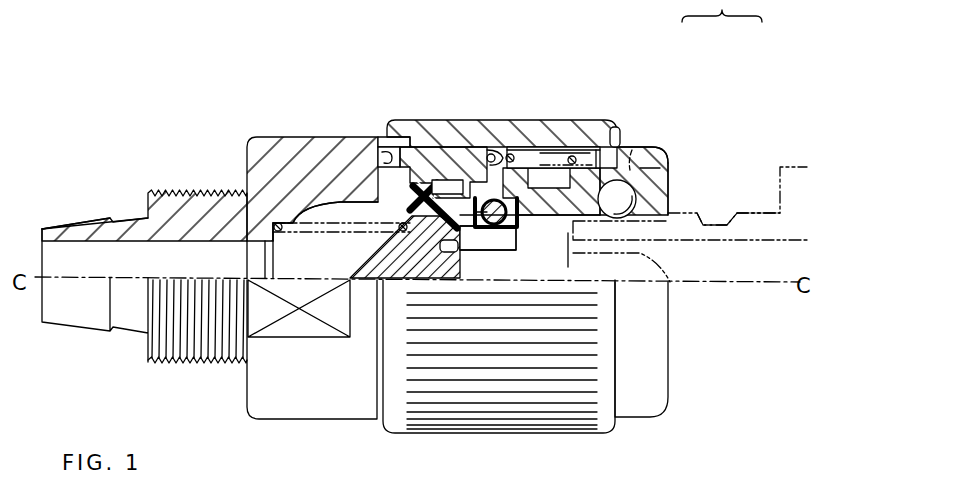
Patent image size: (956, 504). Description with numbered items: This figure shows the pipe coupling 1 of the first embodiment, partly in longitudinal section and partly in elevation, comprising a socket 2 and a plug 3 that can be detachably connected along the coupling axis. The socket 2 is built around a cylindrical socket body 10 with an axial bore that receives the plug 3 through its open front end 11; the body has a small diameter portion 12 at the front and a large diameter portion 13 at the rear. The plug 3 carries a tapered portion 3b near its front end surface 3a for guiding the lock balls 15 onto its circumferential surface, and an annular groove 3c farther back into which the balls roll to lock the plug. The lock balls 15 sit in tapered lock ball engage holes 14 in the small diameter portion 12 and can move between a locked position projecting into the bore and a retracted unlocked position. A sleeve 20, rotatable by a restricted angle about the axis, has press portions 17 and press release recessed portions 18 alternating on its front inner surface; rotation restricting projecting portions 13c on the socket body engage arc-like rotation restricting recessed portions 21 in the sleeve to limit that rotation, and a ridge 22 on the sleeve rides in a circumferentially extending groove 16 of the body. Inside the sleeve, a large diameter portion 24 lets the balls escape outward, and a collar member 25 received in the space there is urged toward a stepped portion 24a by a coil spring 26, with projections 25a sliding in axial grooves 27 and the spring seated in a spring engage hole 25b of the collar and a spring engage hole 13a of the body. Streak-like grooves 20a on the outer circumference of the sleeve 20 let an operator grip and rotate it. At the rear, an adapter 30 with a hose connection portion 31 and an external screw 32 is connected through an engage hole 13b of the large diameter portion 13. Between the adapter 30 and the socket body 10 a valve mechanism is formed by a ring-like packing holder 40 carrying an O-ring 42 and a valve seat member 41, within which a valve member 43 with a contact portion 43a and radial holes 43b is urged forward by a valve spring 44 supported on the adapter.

The pipe coupling 1 is at (731, 4).
The socket 2 is at (670, 106).
The plug 3 is at (780, 167).
The front end surface 3a is at (670, 282).
The tapered portion 3b is at (658, 217).
The annular groove 3c is at (737, 215).
The socket body 10 is at (284, 128).
The front end 11 is at (668, 208).
The small diameter portion 12 is at (520, 208).
The large diameter portion 13 is at (310, 137).
The spring engage hole 13a is at (472, 145).
The engage hole 13b is at (385, 158).
The rotation restricting projecting portion 13c is at (388, 137).
The lock ball engage hole 14 is at (566, 240).
The lock ball 15 is at (668, 160).
The circumferentially extending groove 16 is at (668, 190).
The press portion 17 is at (622, 142).
The press release recessed portion 18 is at (632, 150).
The sleeve 20 is at (477, 101).
The knurled grip 20a is at (590, 364).
The rotation restricting recessed portion 21 is at (418, 120).
The ridge 22 is at (668, 178).
The large diameter portion 24 is at (533, 121).
The stepped portion 24a is at (623, 121).
The collar member 25 is at (583, 121).
The projection 25a is at (568, 155).
The spring engage hole 25b is at (598, 160).
The coil spring 26 is at (505, 121).
The groove 27 is at (514, 154).
The adapter 30 is at (156, 185).
The hose connection portion 31 is at (82, 221).
The external screw 32 is at (207, 191).
The packing holder 40 is at (455, 280).
The valve seat member 41 is at (373, 215).
The O-ring 42 is at (480, 280).
The valve member 43 is at (372, 243).
The contact portion 43a is at (505, 280).
The radial hole 43b is at (478, 280).
The valve spring 44 is at (292, 234).